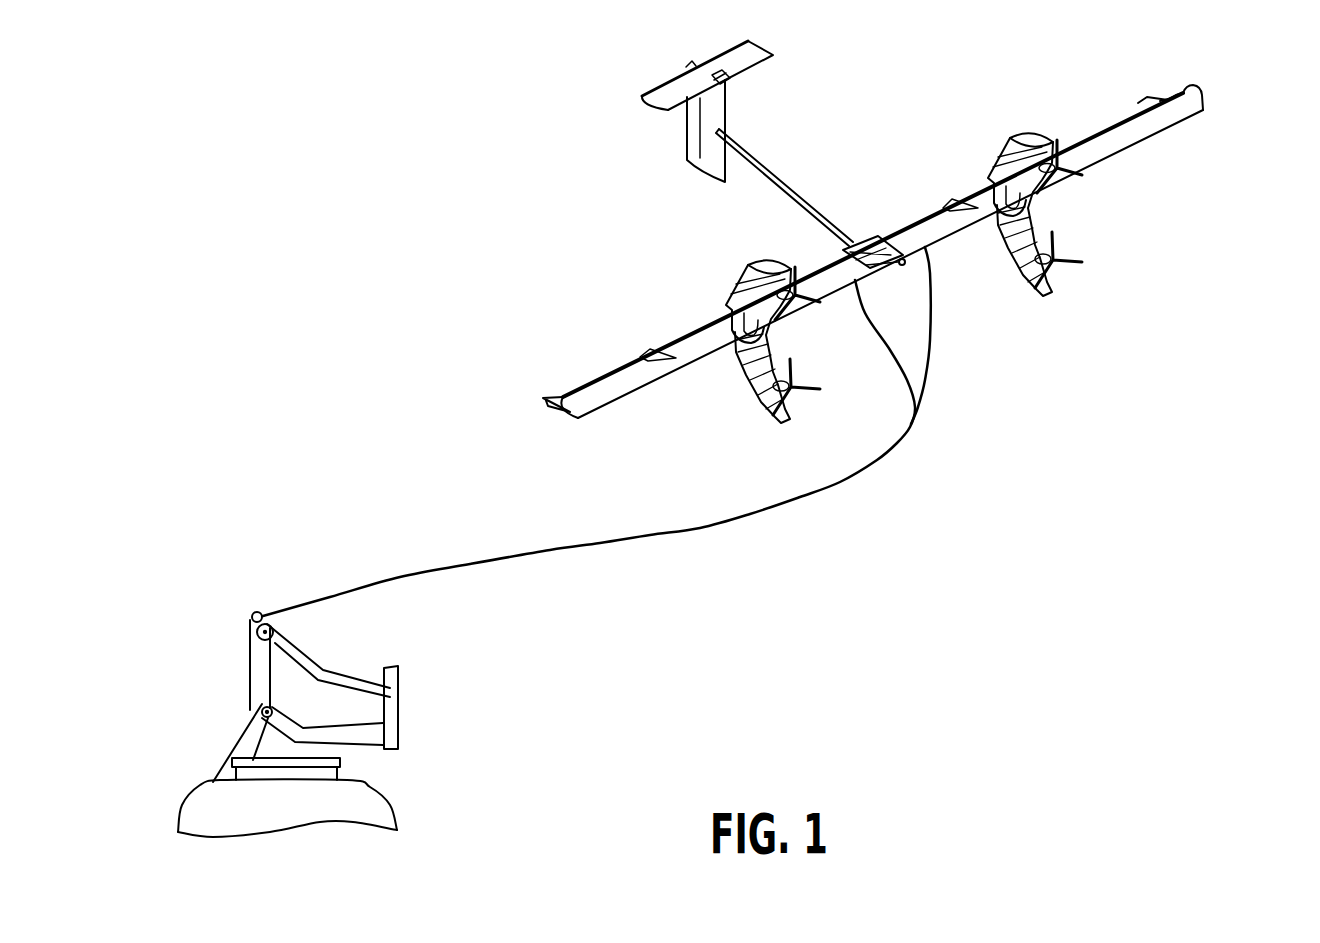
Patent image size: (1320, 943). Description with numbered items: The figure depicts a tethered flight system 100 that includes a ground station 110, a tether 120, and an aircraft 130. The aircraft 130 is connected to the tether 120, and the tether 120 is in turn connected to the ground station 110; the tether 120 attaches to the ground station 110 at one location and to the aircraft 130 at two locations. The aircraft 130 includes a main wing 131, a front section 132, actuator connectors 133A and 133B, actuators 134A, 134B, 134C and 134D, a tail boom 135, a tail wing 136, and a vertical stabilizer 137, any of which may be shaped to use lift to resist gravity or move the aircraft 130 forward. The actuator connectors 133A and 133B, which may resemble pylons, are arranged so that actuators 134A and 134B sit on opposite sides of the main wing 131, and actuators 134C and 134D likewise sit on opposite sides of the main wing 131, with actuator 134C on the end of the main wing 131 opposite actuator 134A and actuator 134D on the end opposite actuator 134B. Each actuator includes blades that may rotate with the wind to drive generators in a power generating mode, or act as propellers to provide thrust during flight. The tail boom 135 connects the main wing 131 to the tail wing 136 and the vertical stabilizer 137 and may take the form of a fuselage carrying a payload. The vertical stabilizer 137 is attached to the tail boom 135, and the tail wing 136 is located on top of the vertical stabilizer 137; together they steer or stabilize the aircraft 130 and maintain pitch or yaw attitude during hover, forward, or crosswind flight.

The tethered flight system 100 is at (254, 219).
The ground station 110 is at (260, 673).
The tether 120 is at (378, 575).
The aircraft 130 is at (1290, 75).
The main wing 131 is at (943, 229).
The front section 132 is at (900, 274).
The actuator connector 133A is at (1007, 145).
The actuator connector 133B is at (740, 281).
The actuator 134A is at (1063, 180).
The actuator 134B is at (1062, 272).
The actuator 134C is at (803, 313).
The actuator 134D is at (803, 402).
The tail boom 135 is at (788, 175).
The tail wing 136 is at (763, 42).
The vertical stabilizer 137 is at (713, 173).